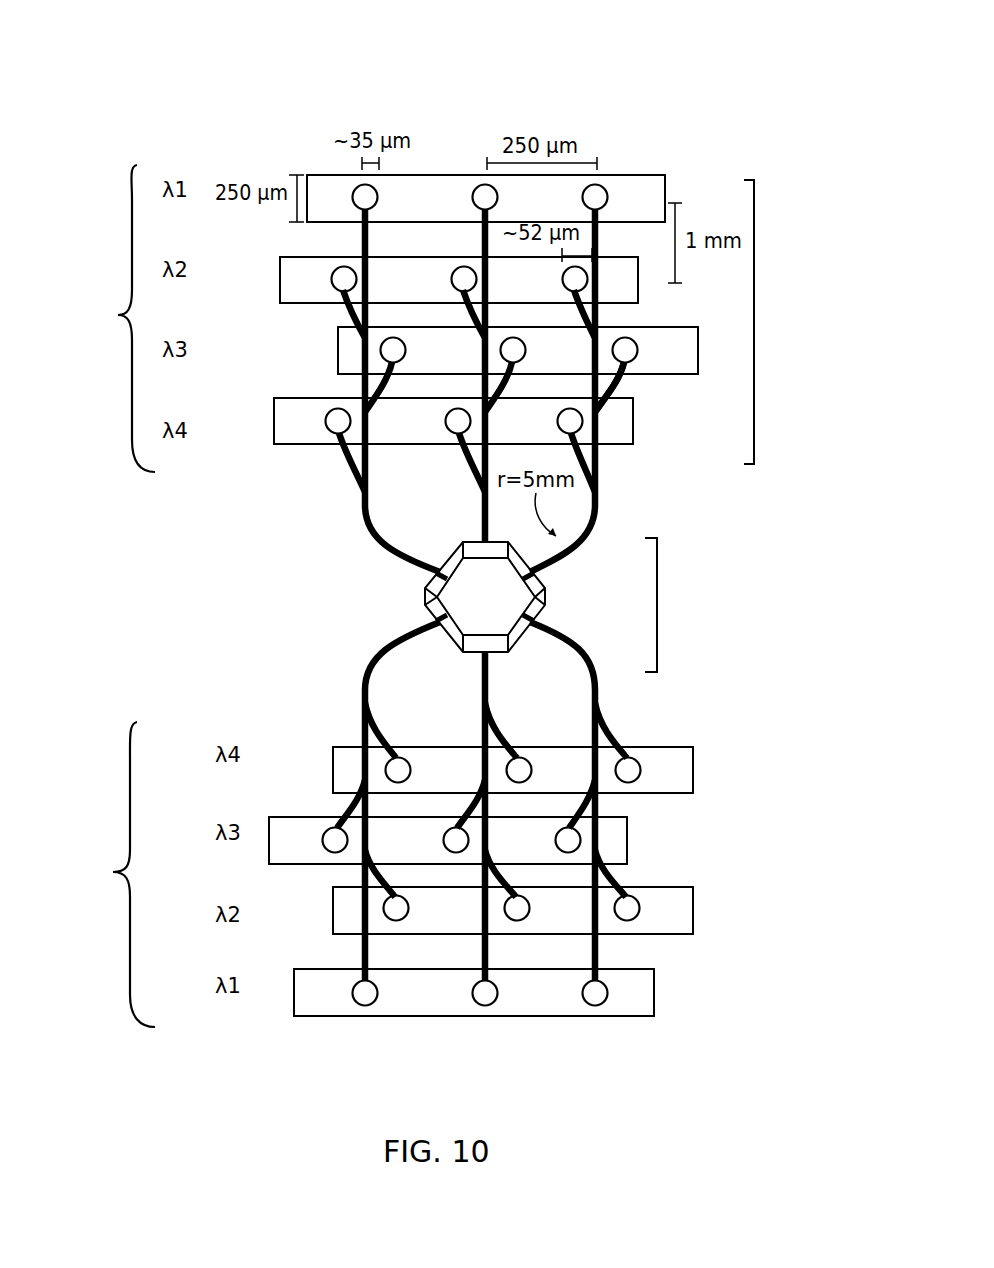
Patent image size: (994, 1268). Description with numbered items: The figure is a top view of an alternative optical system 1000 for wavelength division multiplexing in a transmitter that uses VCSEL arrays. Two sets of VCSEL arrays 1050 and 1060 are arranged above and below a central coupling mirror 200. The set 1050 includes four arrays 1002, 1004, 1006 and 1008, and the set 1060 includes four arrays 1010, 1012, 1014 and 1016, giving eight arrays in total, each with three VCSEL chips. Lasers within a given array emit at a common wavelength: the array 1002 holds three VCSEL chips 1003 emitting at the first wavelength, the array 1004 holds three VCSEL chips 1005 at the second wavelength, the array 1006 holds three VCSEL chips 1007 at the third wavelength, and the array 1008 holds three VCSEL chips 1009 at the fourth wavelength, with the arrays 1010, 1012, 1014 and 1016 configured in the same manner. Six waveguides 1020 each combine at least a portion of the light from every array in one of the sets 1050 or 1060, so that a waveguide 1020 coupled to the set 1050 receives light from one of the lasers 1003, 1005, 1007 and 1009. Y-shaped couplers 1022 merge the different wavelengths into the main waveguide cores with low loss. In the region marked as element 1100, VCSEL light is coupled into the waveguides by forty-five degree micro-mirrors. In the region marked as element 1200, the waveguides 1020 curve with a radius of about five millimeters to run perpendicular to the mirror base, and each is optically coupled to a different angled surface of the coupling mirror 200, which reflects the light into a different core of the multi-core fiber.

The optical system 1000 is at (460, 30).
The VCSEL array 1002 is at (643, 174).
The VCSEL chips 1003 is at (632, 152).
The VCSEL array 1004 is at (278, 289).
The VCSEL chips 1005 is at (563, 279).
The VCSEL array 1006 is at (337, 357).
The VCSEL chips 1007 is at (630, 340).
The VCSEL array 1008 is at (274, 413).
The VCSEL chips 1009 is at (565, 428).
The laser array 1010 is at (655, 995).
The laser array 1012 is at (694, 910).
The laser array 1014 is at (628, 838).
The laser array 1016 is at (694, 767).
The waveguide 1020 is at (596, 520).
The y-shaped coupler 1022 is at (623, 377).
The set of VCSEL arrays 1050 is at (118, 315).
The set of VCSEL arrays 1060 is at (113, 872).
The element 1100 is at (756, 320).
The element 1200 is at (660, 630).
The coupling mirror 200 is at (504, 609).